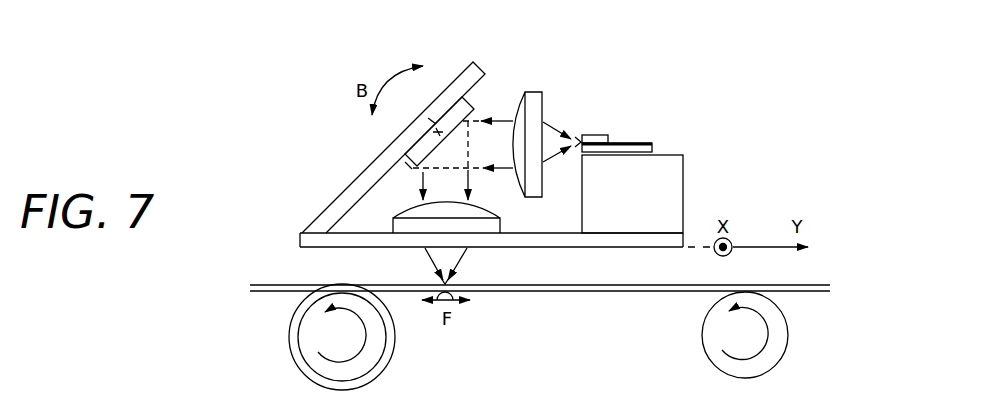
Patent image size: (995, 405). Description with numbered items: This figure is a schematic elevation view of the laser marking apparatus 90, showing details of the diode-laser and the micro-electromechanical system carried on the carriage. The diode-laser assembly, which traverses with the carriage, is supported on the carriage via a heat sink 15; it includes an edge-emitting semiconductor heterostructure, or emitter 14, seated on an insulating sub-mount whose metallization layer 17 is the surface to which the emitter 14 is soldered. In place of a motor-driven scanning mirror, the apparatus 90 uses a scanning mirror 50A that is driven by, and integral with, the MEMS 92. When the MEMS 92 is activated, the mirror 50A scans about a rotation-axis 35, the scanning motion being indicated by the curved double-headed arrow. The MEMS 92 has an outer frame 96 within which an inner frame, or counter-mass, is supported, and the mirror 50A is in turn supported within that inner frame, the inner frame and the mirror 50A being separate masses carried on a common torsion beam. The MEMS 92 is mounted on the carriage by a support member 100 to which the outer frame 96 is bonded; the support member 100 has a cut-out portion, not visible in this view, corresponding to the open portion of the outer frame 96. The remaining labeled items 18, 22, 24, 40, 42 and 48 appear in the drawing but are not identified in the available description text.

The laser marking apparatus 90 is at (705, 73).
The support member 100 is at (470, 72).
The micro-electromechanical system (MEMS) 92 is at (485, 95).
The scanning mirror 50A is at (437, 131).
The rotation-axis 35 is at (432, 121).
The outer frame 96 is at (408, 168).
The dome lens 24 is at (413, 213).
The lens 22 is at (528, 91).
The light beams 18 is at (560, 117).
The edge-emitting semiconductor heterostructure (emitter) 14 is at (595, 137).
The metallization layer 17 is at (627, 143).
The heat sink 15 is at (678, 182).
The drive roller 42 is at (290, 322).
The roller core 40 is at (370, 352).
The second roller 48 is at (780, 345).